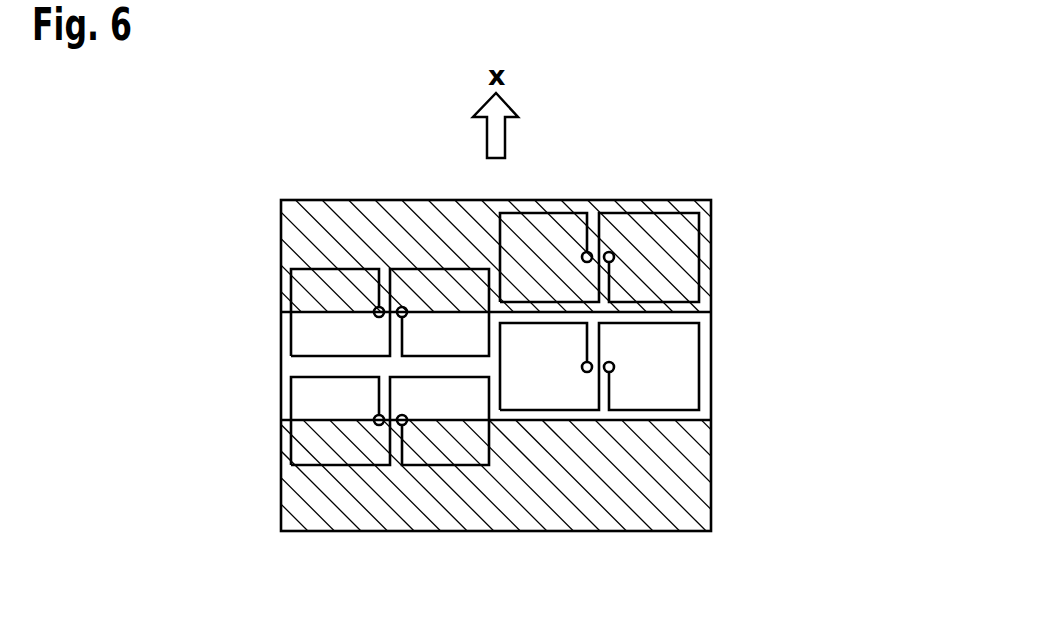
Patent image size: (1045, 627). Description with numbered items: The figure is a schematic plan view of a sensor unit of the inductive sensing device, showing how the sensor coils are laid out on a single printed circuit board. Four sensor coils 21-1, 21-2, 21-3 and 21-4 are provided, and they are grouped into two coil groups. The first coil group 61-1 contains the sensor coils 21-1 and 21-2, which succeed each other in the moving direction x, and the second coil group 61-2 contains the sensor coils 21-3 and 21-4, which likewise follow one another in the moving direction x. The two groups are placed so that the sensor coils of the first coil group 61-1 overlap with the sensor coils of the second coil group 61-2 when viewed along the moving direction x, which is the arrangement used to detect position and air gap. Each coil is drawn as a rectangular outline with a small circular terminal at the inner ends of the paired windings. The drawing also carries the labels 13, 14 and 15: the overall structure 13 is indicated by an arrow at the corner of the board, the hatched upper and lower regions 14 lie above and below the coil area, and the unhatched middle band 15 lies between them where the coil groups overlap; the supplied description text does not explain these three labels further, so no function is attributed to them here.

The sensor arrangement 13 is at (720, 541).
The insulating layer 14 is at (711, 231).
The gap region 15 is at (711, 407).
The sensor coil 21-1 is at (680, 278).
The sensor coil 21-2 is at (674, 366).
The sensor coil 21-3 is at (315, 336).
The sensor coil 21-4 is at (315, 400).
The first coil group 61-1 is at (721, 311).
The second coil group 61-2 is at (274, 367).